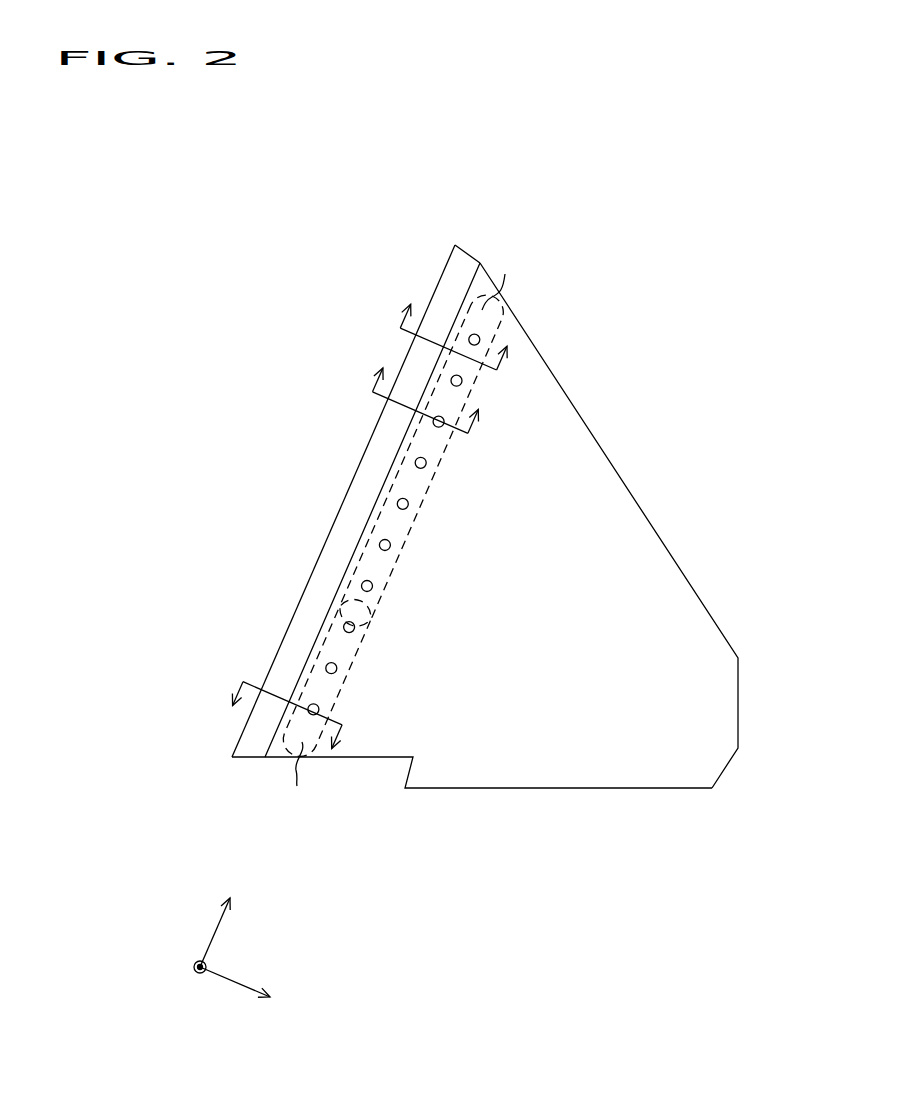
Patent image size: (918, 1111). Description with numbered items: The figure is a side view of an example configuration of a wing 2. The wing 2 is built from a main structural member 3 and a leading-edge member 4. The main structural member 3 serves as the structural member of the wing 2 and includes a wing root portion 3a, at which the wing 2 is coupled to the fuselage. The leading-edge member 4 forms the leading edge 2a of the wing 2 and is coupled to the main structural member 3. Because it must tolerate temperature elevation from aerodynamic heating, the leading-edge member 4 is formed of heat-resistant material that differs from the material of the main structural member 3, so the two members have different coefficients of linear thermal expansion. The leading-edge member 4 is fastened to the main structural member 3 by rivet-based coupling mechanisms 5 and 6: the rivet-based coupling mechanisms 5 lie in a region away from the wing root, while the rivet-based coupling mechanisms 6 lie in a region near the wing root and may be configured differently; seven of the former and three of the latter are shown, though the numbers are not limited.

The wing 2 is at (694, 250).
The leading edge 2a is at (320, 549).
The main structural member 3 is at (641, 531).
The wing root portion 3a is at (608, 775).
The leading-edge member 4 is at (356, 485).
The rivet-based coupling mechanisms 5 is at (477, 345).
The rivet-based coupling mechanisms 6 is at (352, 631).